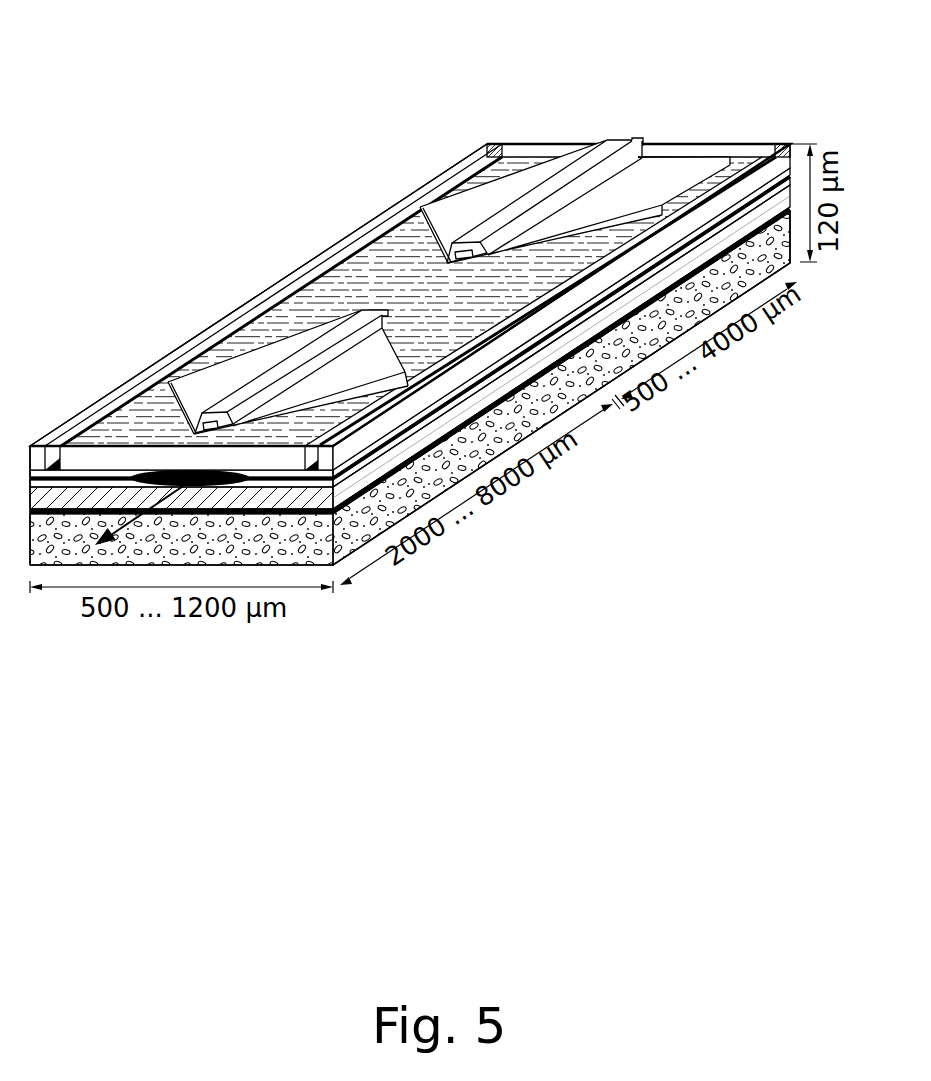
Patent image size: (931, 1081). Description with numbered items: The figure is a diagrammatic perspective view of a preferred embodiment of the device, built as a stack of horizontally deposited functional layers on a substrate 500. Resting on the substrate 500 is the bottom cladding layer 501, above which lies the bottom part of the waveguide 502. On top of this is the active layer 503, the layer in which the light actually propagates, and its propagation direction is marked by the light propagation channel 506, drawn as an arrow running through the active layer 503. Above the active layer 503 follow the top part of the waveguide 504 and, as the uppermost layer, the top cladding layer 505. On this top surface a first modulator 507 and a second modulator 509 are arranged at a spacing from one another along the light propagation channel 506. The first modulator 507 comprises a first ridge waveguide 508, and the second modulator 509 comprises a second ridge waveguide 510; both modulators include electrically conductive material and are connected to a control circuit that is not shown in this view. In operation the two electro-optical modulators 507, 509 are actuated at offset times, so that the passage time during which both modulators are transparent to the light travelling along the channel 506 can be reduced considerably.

The substrate 500 is at (273, 543).
The bottom cladding layer 501 is at (292, 503).
The bottom part of the waveguide 502 is at (292, 483).
The active layer 503 is at (91, 476).
The top part of the waveguide 504 is at (103, 471).
The top cladding layer 505 is at (120, 460).
The light propagation channel 506 is at (153, 507).
The first modulator 507 is at (245, 357).
The first ridge waveguide 508 is at (313, 347).
The second modulator 509 is at (502, 186).
The second ridge waveguide 510 is at (567, 177).